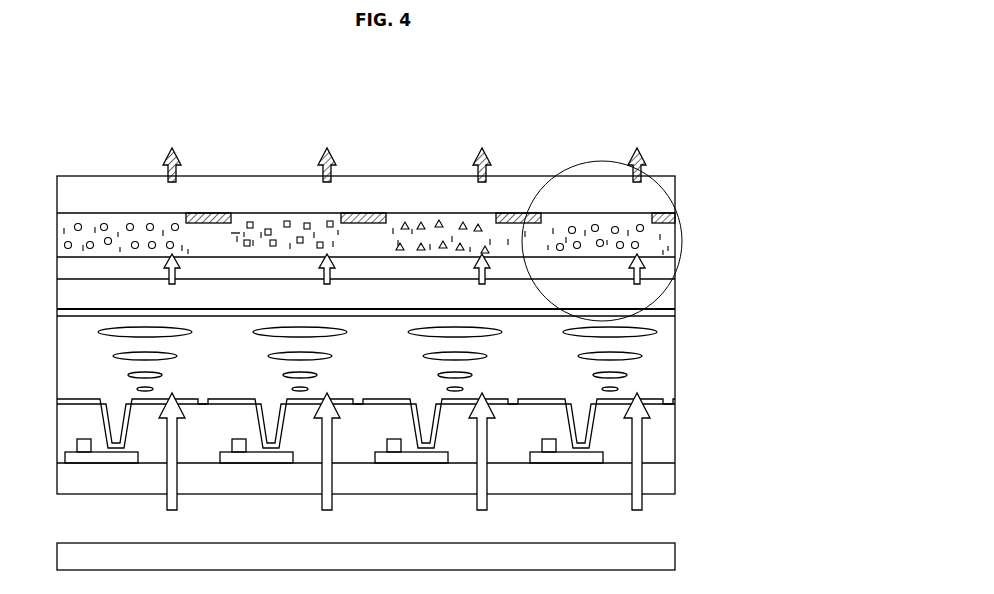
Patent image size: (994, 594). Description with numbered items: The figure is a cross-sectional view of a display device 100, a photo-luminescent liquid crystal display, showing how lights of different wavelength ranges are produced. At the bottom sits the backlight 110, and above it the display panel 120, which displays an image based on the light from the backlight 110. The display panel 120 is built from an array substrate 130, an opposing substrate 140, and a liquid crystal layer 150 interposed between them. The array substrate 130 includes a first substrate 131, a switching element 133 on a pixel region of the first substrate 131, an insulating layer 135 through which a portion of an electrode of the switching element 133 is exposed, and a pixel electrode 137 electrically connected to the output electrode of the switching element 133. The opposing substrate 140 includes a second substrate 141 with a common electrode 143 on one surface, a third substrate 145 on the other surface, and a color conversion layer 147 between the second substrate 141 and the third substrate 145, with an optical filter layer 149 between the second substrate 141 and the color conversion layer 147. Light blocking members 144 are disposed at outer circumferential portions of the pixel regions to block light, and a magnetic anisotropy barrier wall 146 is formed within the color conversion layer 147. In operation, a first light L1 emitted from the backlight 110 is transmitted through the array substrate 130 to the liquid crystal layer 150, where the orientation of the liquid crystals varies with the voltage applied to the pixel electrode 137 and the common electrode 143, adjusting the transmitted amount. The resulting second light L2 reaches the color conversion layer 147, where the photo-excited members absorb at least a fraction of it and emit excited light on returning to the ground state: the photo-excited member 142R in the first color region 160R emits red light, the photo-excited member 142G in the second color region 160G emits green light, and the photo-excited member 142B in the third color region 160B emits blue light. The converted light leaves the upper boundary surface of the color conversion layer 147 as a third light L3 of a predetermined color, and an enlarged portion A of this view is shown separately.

The display device 100 is at (687, 151).
The backlight 110 is at (665, 556).
The display panel 120 is at (795, 195).
The array substrate 130 is at (745, 388).
The first substrate 131 is at (665, 481).
The switching element 133 is at (596, 460).
The insulating layer 135 is at (665, 430).
The pixel electrode 137 is at (652, 397).
The opposing substrate 140 is at (745, 195).
The second substrate 141 is at (665, 290).
The photo-excited member 142R is at (104, 223).
The photo-excited member 142G is at (287, 221).
The photo-excited member 142B is at (435, 221).
The common electrode 143 is at (665, 310).
The light blocking member 144 is at (203, 213).
The third substrate 145 is at (665, 192).
The magnetic anisotropy barrier wall 146 is at (230, 228).
The color conversion layer 147 is at (665, 228).
The optical filter layer 149 is at (665, 264).
The liquid crystal layer 150 is at (665, 357).
The first color region 160R is at (208, 130).
The second color region 160G is at (365, 130).
The third color region 160B is at (520, 130).
The enlarged portion A is at (605, 160).
The first light L1 is at (404, 463).
The second light L2 is at (404, 281).
The third light L3 is at (404, 154).